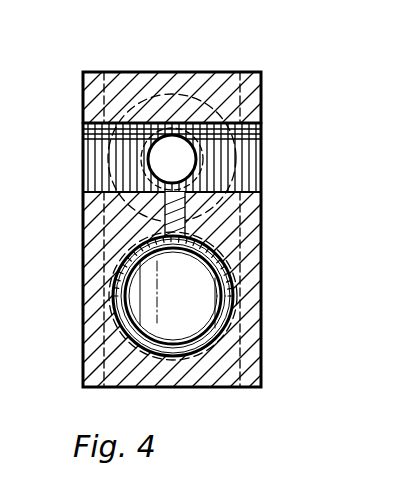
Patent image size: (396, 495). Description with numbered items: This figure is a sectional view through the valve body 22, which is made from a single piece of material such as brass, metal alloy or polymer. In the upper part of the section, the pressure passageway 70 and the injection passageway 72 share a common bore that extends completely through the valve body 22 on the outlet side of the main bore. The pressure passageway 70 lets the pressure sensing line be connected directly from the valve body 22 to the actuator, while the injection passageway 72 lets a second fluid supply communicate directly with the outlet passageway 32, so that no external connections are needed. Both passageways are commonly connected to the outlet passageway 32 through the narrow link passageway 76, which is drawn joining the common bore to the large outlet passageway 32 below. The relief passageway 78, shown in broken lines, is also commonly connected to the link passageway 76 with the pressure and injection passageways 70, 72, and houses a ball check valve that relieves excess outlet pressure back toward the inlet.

The valve body 22 is at (272, 257).
The outlet passageway 32 is at (197, 311).
The pressure passageway 70 is at (85, 167).
The injection passageway 72 is at (243, 141).
The link passageway 76 is at (262, 216).
The relief passageway 78 is at (178, 150).